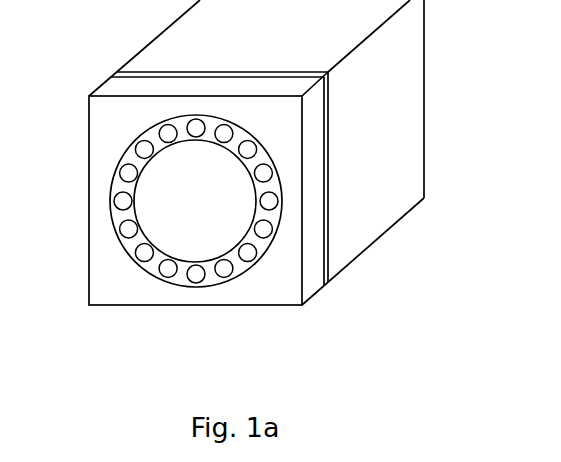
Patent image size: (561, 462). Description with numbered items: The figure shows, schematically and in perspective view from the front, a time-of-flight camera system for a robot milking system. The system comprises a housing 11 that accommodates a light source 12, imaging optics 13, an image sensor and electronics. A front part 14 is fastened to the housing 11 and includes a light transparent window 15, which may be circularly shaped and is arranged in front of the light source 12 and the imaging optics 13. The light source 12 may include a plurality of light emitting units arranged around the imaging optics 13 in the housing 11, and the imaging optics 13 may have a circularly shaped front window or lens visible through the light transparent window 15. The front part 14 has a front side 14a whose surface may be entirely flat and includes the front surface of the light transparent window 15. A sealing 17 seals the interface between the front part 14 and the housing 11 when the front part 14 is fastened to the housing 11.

The housing 11 is at (424, 156).
The light source 12 is at (117, 215).
The imaging optics 13 is at (163, 240).
The front part 14 is at (310, 298).
The front side 14a is at (288, 292).
The light transparent window 15 is at (245, 270).
The sealing 17 is at (328, 245).